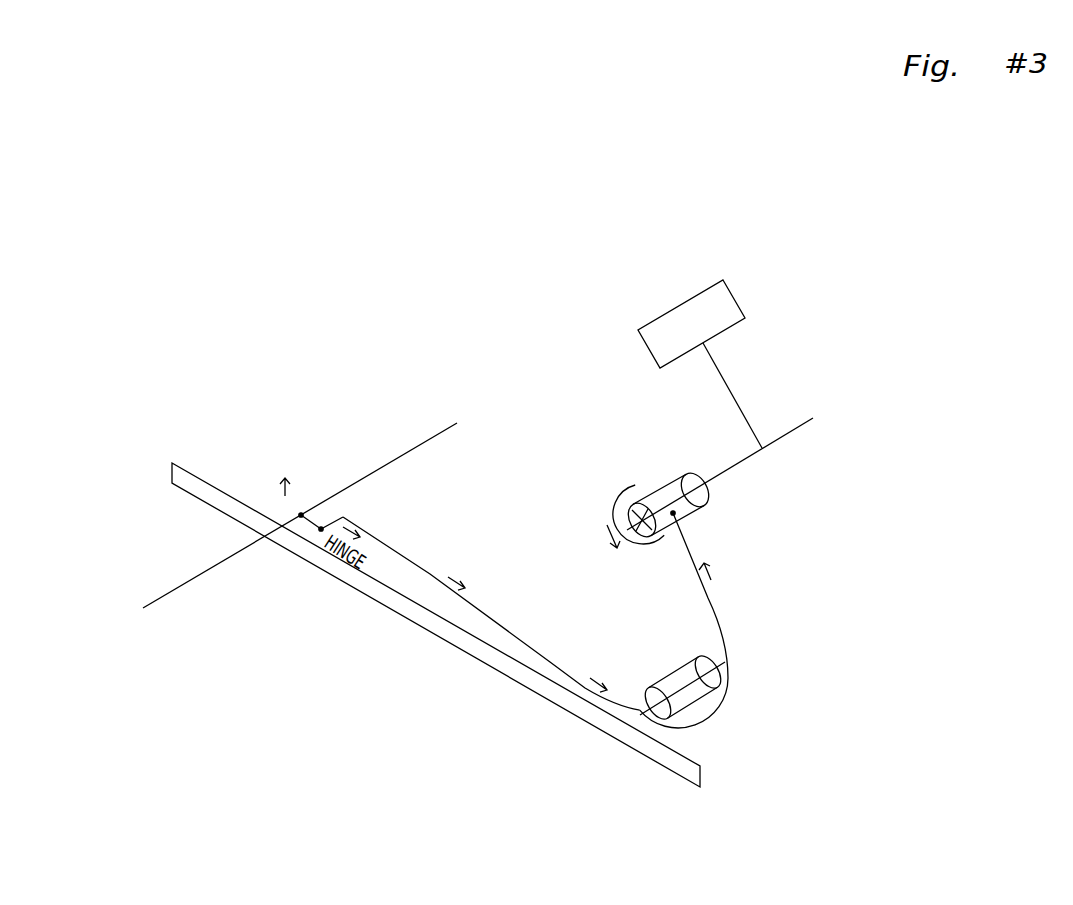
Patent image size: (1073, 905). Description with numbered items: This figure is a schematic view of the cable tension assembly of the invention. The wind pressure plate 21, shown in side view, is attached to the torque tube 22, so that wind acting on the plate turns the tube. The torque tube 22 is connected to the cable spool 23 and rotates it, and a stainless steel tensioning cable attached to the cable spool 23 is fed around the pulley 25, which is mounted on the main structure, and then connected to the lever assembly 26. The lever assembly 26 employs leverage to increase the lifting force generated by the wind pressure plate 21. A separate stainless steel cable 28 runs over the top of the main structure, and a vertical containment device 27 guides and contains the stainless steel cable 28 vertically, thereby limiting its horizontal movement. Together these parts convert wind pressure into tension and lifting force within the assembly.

The wind pressure plate 21 is at (709, 299).
The torque tube 22 is at (731, 436).
The cable spool 23 is at (696, 508).
The pulley 25 is at (653, 679).
The lever assembly 26 is at (491, 602).
The vertical containment device 27 is at (271, 464).
The stainless steel cable 28 is at (435, 570).